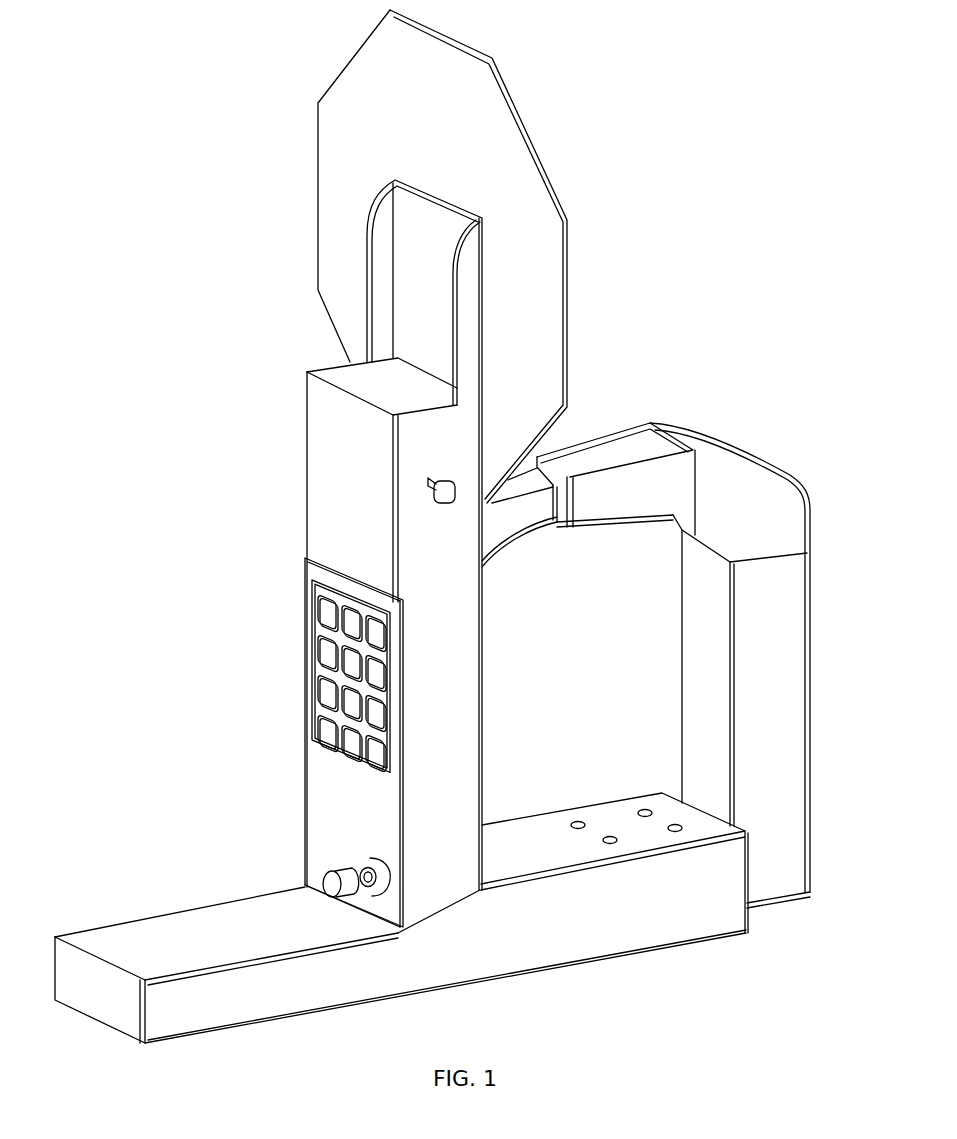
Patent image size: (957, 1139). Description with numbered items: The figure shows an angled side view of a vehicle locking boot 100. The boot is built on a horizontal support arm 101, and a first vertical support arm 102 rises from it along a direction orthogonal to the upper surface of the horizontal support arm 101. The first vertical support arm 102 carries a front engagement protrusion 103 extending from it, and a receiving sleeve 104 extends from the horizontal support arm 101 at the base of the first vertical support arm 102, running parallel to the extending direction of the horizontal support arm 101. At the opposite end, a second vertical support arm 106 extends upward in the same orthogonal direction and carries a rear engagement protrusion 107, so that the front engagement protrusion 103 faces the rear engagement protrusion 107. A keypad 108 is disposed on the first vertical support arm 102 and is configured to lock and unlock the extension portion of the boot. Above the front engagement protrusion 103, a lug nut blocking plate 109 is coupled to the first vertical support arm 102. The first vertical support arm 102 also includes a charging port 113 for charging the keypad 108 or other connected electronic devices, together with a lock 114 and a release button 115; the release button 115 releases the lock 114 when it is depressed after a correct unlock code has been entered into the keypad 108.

The vehicle locking boot 100 is at (140, 115).
The horizontal support arm 101 is at (675, 925).
The first vertical support arm 102 is at (308, 398).
The front engagement protrusion 103 is at (517, 530).
The receiving sleeve 104 is at (180, 1022).
The second vertical support arm 106 is at (783, 637).
The rear engagement protrusion 107 is at (637, 477).
The keypad 108 is at (330, 780).
The lug nut blocking plate 109 is at (517, 157).
The charging port 113 is at (432, 495).
The lock 114 is at (384, 877).
The release button 115 is at (327, 882).